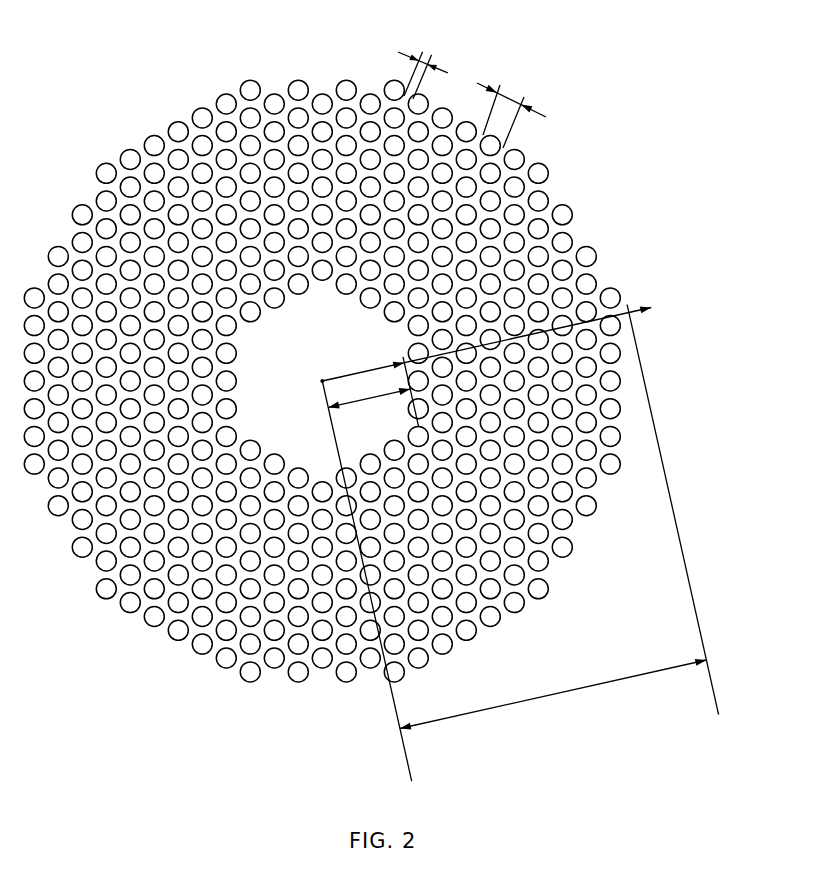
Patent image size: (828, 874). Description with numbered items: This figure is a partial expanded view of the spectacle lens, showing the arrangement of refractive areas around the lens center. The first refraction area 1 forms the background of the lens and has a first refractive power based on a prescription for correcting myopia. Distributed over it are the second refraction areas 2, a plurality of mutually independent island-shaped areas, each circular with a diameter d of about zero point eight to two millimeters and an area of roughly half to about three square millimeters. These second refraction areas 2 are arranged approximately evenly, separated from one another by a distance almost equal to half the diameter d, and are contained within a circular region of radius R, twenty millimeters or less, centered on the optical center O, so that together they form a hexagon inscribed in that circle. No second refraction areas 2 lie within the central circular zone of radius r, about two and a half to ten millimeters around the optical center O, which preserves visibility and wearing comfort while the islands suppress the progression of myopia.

The first refraction area 1 is at (355, 376).
The second refraction areas 2 is at (233, 93).
The optical center O is at (311, 383).
The radius R is at (520, 543).
The radius r is at (388, 230).
The diameter d is at (511, 113).